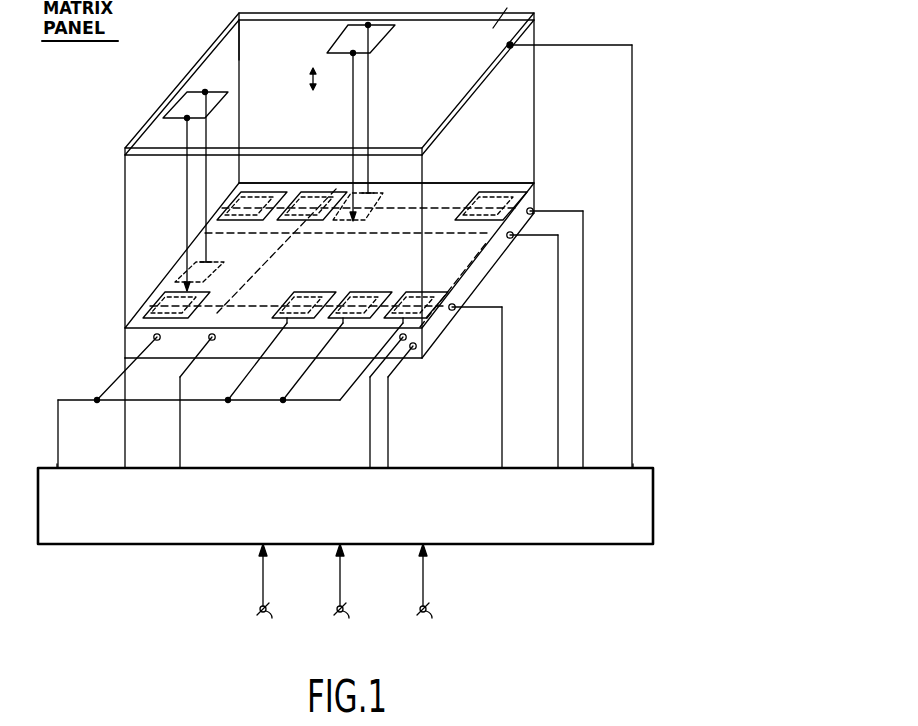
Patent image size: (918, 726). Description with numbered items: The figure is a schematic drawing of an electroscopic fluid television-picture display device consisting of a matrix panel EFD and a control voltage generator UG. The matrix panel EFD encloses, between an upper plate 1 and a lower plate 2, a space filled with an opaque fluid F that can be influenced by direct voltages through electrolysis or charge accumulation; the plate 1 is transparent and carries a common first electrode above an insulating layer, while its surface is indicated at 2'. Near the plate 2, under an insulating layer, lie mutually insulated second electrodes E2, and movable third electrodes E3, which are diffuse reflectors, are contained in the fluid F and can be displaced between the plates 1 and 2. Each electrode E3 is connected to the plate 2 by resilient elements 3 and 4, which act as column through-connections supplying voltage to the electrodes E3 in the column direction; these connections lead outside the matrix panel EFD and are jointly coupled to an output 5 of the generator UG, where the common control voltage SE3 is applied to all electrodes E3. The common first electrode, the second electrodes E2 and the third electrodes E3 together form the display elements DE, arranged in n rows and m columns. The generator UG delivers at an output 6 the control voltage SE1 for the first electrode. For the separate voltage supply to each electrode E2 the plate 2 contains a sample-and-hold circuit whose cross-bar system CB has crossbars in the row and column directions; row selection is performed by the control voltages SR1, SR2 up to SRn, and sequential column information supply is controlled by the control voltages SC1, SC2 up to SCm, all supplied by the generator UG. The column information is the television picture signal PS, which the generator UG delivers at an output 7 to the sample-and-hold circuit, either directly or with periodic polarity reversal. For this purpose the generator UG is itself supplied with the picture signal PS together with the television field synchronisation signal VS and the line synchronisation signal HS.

The plate 1 is at (527, 33).
The plate 2 is at (367, 268).
The plate surface 2' is at (505, 14).
The resilient element 3 is at (353, 109).
The resilient element 4 is at (371, 77).
The output 5 is at (57, 464).
The output 6 is at (633, 470).
The output 7 is at (390, 468).
The fluid F is at (255, 42).
The third electrode E3 is at (337, 57).
The second electrode E2 is at (345, 198).
The display element DE is at (405, 121).
The matrix panel EFD is at (125, 253).
The cross-bar system CB is at (457, 260).
The television picture signal PS is at (390, 407).
The control voltage SE1 is at (632, 407).
The control voltage SE3 is at (58, 415).
The control voltage SC1 is at (125, 415).
The control voltage SC2 is at (180, 415).
The control voltage SCm is at (370, 440).
The control voltage SRn is at (501, 428).
The control voltage SR2 is at (557, 427).
The control voltage SR1 is at (583, 423).
The control voltage generator UG is at (345, 506).
The television field synchronisation signal VS is at (263, 597).
The television line synchronisation signal HS is at (423, 597).